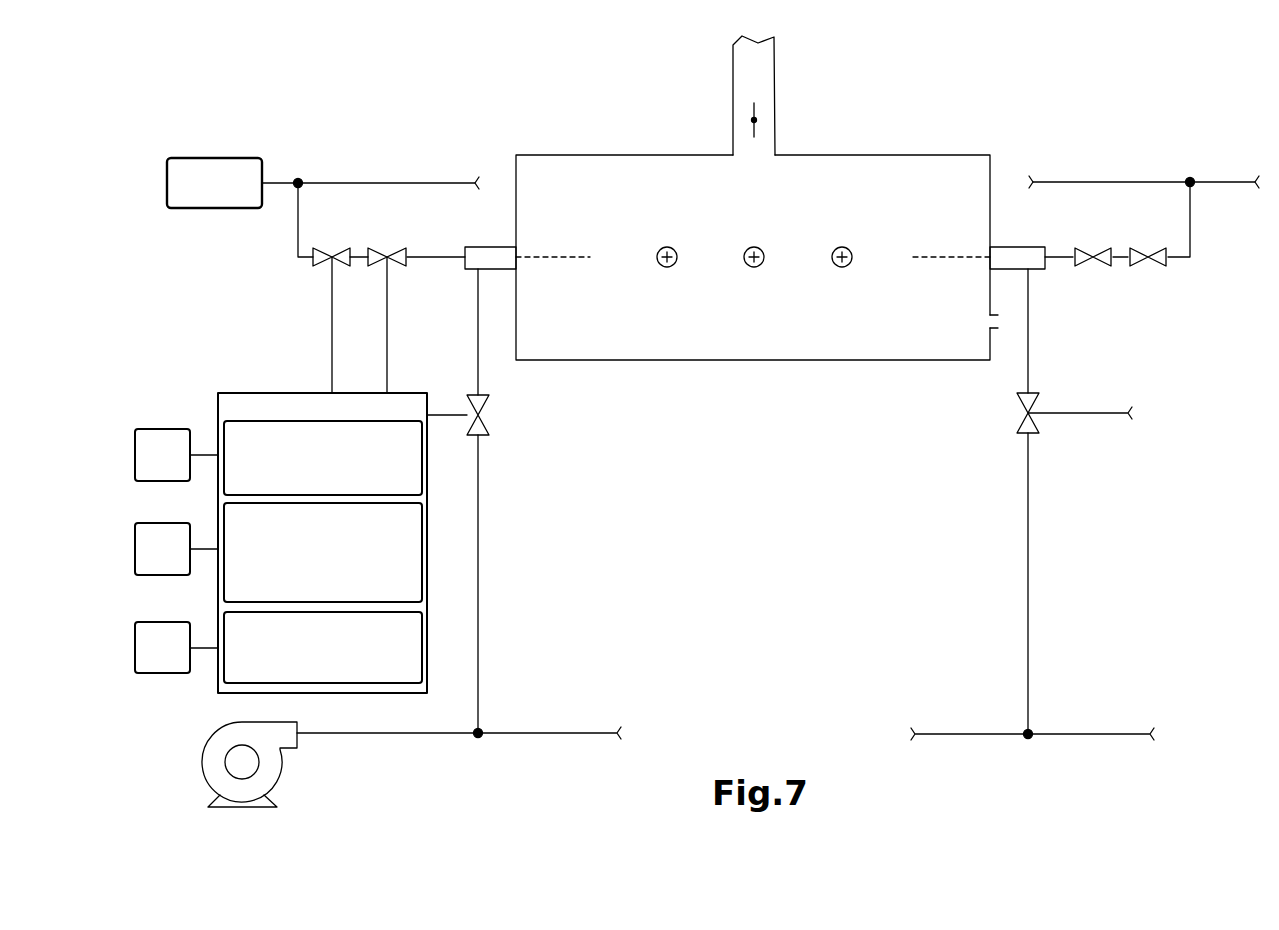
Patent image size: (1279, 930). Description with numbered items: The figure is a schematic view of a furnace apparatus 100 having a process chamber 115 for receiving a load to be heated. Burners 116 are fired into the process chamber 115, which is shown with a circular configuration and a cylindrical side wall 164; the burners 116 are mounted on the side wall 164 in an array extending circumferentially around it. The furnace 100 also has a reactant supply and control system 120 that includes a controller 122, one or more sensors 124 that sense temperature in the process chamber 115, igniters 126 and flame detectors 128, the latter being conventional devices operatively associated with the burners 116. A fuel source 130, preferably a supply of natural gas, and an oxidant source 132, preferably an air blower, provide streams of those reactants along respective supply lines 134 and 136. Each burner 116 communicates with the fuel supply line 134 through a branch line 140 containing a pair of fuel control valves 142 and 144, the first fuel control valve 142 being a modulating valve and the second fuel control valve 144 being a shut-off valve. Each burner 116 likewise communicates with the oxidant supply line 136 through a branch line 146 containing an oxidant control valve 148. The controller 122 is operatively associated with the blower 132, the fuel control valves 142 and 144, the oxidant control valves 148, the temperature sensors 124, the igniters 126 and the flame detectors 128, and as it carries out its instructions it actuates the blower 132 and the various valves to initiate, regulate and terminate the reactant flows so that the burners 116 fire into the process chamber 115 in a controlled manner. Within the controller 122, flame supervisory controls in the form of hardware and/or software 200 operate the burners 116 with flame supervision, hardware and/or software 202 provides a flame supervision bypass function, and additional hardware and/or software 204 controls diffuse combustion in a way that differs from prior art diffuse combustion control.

The furnace apparatus 100 is at (560, 100).
The process chamber 115 is at (767, 201).
The burners 116 is at (483, 257).
The reactant supply and control system 120 is at (420, 132).
The controller 122 is at (233, 392).
The sensors 124 is at (177, 466).
The igniters 126 is at (177, 559).
The flame detectors 128 is at (177, 658).
The fuel source 130 is at (212, 166).
The oxidant source 132 is at (218, 745).
The fuel supply line 134 is at (350, 183).
The oxidant supply line 136 is at (368, 735).
The branch line 140 is at (298, 233).
The first fuel control valve 142 is at (317, 265).
The second fuel control valve 144 is at (403, 267).
The branch line 146 is at (480, 523).
The oxidant control valve 148 is at (485, 405).
The side wall 164 is at (517, 215).
The flame supervisory controls hardware and/or software 200 is at (408, 466).
The flame supervision bypass hardware and/or software 202 is at (408, 562).
The diffuse combustion control hardware and/or software 204 is at (402, 648).